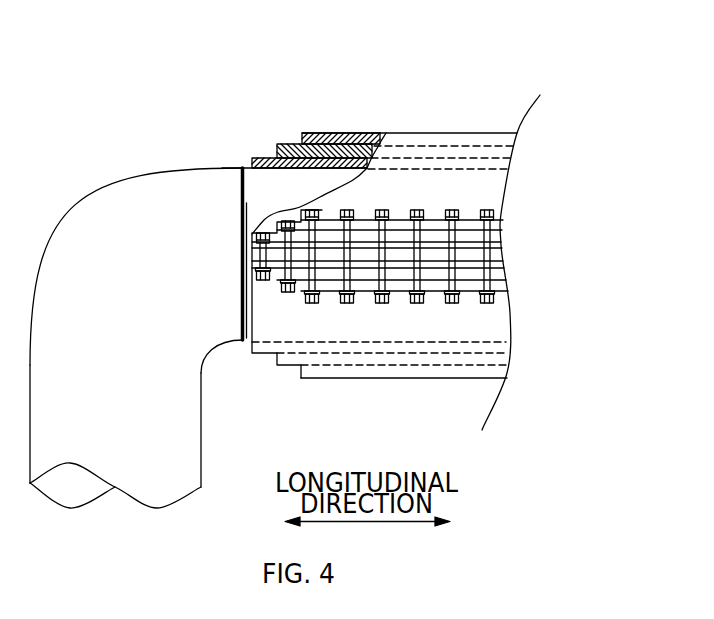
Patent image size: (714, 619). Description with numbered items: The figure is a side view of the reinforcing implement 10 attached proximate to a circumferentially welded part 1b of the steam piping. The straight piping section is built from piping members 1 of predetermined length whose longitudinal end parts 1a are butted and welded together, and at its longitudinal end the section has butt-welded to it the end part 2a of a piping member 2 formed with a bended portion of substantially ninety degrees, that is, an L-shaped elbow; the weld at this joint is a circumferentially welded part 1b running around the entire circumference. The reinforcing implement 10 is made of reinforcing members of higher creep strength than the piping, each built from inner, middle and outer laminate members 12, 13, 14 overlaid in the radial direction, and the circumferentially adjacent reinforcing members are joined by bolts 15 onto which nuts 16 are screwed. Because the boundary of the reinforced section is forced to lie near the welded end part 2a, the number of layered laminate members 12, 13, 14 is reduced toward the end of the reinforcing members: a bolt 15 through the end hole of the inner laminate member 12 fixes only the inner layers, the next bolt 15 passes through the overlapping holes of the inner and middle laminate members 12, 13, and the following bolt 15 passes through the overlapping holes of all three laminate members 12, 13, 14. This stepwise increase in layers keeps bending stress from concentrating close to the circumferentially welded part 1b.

The piping member 1 is at (267, 180).
The end part 1a is at (236, 170).
The circumferentially welded part 1b is at (237, 258).
The piping member with bended portion 2 is at (153, 192).
The end part of piping member 2a is at (247, 341).
The reinforcing implement 10 is at (477, 108).
The inner laminate member 12 is at (262, 160).
The middle laminate member 13 is at (287, 146).
The outer laminate member 14 is at (335, 133).
The bolt 15 is at (311, 208).
The nut 16 is at (255, 278).